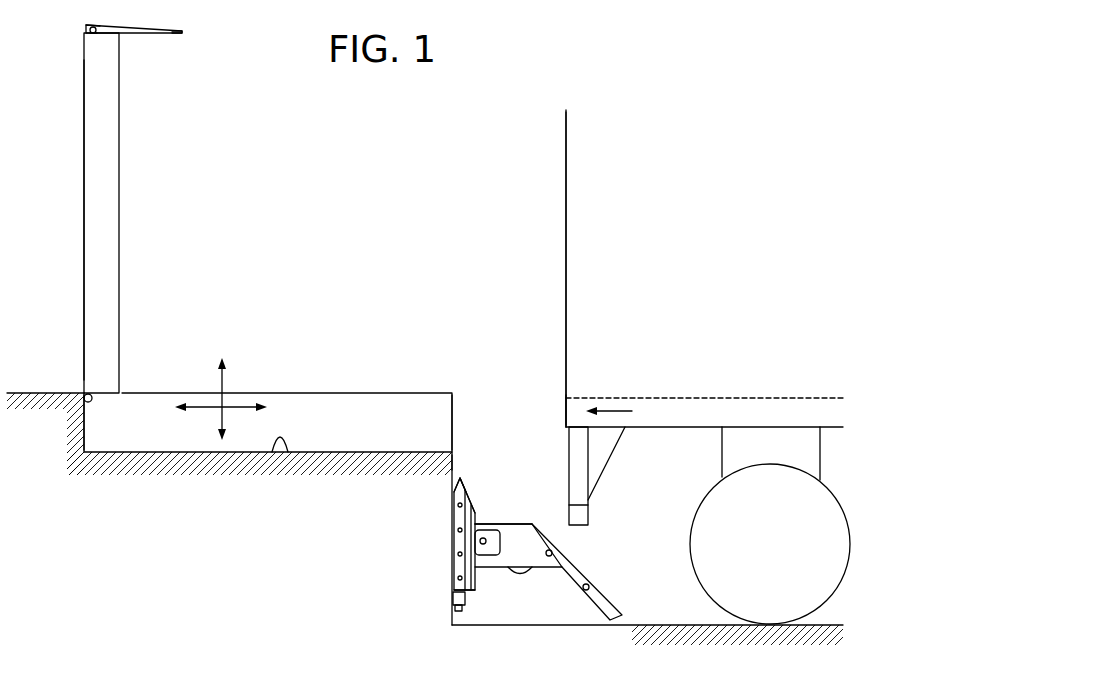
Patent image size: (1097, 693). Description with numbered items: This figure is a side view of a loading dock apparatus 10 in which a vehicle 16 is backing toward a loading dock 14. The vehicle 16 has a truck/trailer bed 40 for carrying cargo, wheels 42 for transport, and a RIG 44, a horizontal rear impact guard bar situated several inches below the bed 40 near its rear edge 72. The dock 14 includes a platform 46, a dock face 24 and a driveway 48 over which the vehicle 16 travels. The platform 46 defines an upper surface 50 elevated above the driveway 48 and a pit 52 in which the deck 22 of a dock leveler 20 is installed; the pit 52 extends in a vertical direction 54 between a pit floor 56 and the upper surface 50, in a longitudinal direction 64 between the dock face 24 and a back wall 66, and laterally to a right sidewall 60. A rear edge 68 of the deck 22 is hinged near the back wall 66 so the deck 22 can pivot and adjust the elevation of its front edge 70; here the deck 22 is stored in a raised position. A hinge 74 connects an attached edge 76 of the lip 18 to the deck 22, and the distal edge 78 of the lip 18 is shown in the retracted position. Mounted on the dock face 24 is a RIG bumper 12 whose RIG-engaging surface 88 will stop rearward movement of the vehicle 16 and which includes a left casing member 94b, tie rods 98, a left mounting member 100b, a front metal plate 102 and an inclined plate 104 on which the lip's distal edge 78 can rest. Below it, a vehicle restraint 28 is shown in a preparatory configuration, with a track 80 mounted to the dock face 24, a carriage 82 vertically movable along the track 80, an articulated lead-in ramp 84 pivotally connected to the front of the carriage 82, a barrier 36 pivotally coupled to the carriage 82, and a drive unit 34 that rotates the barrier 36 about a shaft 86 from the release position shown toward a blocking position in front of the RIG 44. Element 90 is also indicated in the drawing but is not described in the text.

The loading dock apparatus 10 is at (668, 246).
The RIG bumper 12 is at (461, 480).
The loading dock 14 is at (655, 508).
The vehicle 16 is at (563, 260).
The lip 18 is at (155, 33).
The dock leveler 20 is at (140, 233).
The deck 22 is at (84, 215).
The dock face 24 is at (453, 462).
The vehicle restraint 28 is at (536, 525).
The drive unit 34 is at (484, 557).
The barrier 36 is at (525, 574).
The truck/trailer bed 40 is at (670, 398).
The wheels 42 is at (701, 503).
The RIG 44 is at (580, 527).
The platform 46 is at (36, 393).
The driveway 48 is at (668, 625).
The upper surface 50 is at (306, 393).
The pit 52 is at (332, 406).
The vertical direction 54 is at (225, 382).
The pit floor 56 is at (275, 452).
The right sidewall 60 is at (412, 423).
The longitudinal direction 64 is at (208, 395).
The back wall 66 is at (88, 430).
The rear edge 68 is at (93, 402).
The front edge 70 is at (90, 33).
The rear edge 72 is at (563, 405).
The hinge 74 is at (93, 36).
The attached edge 76 is at (86, 27).
The distal edge 78 is at (174, 33).
The track 80 is at (456, 612).
The carriage 82 is at (538, 568).
The lead-in ramp 84 is at (590, 592).
The shaft 86 is at (480, 540).
The RIG-engaging surface 88 is at (478, 518).
The wedge apex 90 is at (455, 482).
The left casing member 94b is at (466, 592).
The tie rods 98 is at (458, 579).
The left mounting member 100b is at (460, 565).
The front metal plate 102 is at (470, 590).
The inclined plate 104 is at (472, 502).